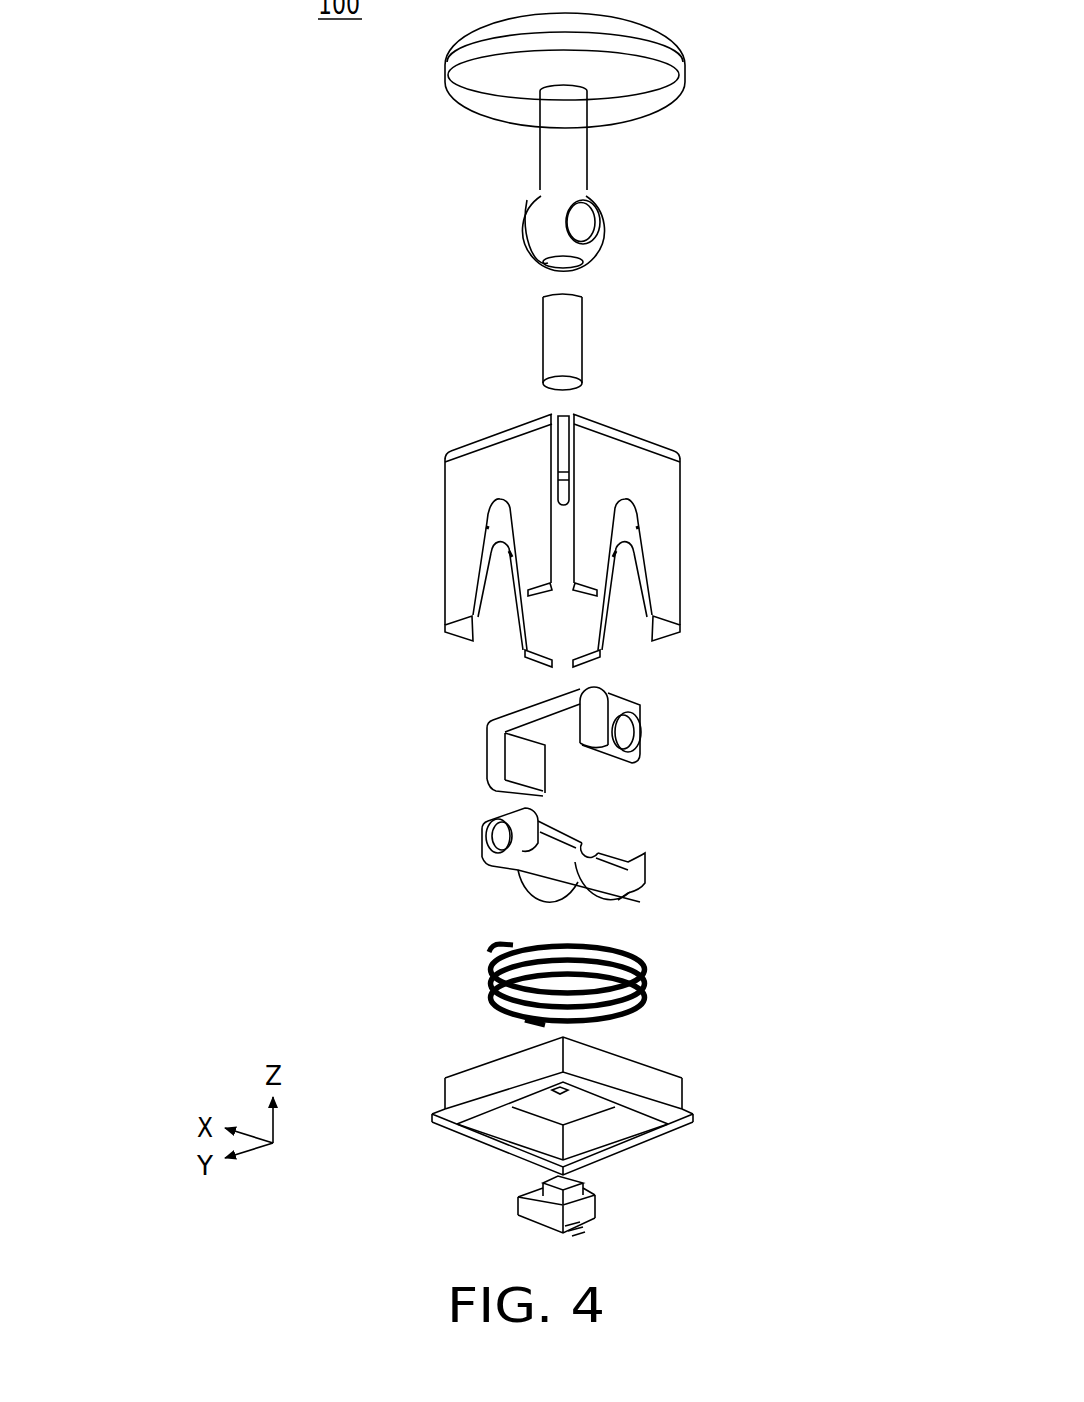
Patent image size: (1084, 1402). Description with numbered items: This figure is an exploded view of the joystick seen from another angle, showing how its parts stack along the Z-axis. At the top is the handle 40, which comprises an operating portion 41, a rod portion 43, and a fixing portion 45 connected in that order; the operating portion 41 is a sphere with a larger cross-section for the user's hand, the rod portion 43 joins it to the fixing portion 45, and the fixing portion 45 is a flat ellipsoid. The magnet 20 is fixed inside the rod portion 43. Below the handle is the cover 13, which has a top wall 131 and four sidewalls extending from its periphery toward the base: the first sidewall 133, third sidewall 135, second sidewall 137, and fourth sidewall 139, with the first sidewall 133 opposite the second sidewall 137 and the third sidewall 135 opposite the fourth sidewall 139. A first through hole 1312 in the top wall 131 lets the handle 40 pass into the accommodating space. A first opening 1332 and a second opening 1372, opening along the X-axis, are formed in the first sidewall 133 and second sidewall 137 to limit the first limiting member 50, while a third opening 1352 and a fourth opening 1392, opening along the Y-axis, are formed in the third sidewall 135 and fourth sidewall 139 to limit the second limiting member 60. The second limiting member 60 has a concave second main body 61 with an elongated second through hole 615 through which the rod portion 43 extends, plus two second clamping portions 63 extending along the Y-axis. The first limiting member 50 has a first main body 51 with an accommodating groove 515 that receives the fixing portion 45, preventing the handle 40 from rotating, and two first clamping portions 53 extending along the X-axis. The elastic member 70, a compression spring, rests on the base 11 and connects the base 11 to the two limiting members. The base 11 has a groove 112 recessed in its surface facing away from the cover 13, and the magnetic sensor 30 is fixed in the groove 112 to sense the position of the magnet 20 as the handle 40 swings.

The handle 40 is at (697, 123).
The operating portion 41 is at (592, 82).
The rod portion 43 is at (571, 158).
The fixing portion 45 is at (585, 218).
The magnet 20 is at (567, 328).
The cover 13 is at (440, 433).
The top wall 131 is at (625, 433).
The first through hole 1312 is at (560, 448).
The first sidewall 133 is at (470, 493).
The fourth sidewall 139 is at (658, 493).
The first opening 1332 is at (481, 533).
The fourth opening 1392 is at (650, 540).
The third opening 1352 is at (500, 583).
The second opening 1372 is at (635, 615).
The third sidewall 135 is at (540, 647).
The second sidewall 137 is at (590, 638).
The second limiting member 60 is at (723, 718).
The second through hole 615 is at (550, 723).
The second main body 61 is at (630, 703).
The second clamping portions 63 is at (630, 733).
The first limiting member 50 is at (415, 818).
The first clamping portions 53 is at (494, 835).
The first main body 51 is at (520, 865).
The accommodating groove 515 is at (594, 846).
The elastic member 70 is at (637, 955).
The base 11 is at (581, 1099).
The groove 112 is at (625, 1126).
The magnetic sensor 30 is at (590, 1202).